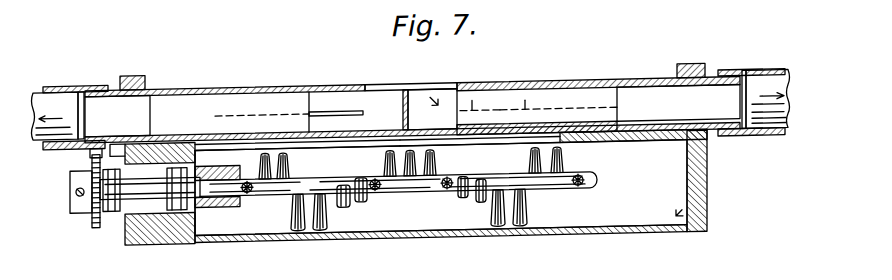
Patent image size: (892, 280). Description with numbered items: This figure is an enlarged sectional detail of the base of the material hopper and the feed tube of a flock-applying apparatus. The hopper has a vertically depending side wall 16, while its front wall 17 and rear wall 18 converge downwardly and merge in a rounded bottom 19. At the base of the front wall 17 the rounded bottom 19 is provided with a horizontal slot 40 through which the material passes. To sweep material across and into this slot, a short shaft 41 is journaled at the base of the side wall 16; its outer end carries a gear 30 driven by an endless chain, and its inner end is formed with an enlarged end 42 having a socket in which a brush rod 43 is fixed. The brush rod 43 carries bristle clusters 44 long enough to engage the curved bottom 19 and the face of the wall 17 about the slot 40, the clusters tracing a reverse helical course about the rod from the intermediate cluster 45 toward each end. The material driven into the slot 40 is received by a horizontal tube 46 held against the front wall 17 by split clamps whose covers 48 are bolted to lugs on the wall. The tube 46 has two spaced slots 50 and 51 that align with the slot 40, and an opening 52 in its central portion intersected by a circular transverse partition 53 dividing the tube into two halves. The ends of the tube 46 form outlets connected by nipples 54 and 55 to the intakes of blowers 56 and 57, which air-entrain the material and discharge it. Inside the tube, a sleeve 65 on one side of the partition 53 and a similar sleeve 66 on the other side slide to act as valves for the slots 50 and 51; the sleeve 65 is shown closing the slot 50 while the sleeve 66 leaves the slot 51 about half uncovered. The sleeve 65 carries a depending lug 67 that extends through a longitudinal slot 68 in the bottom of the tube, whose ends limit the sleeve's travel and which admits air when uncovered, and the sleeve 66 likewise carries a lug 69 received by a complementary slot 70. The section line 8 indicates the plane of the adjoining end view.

The section line 8- 8 is at (350, 124).
The side wall 16 is at (705, 219).
The front wall 17 is at (627, 146).
The rear wall 18 is at (610, 242).
The rounded bottom 19 is at (673, 179).
The gear 30 is at (97, 221).
The horizontal slot 40 is at (515, 143).
The short shaft 41 is at (137, 186).
The enlarged end 42 is at (222, 198).
The brush rod 43 is at (543, 188).
The bristle clusters 44 is at (297, 209).
The cluster 45 is at (410, 176).
The tube 46 is at (550, 86).
The cover 48 is at (135, 71).
The slot 50 is at (472, 142).
The slot 51 is at (325, 140).
The opening 52 is at (377, 67).
The partition 53 is at (402, 114).
The nipple 54 is at (764, 76).
The nipple 55 is at (57, 79).
The blower 56 is at (790, 151).
The blower 57 is at (42, 147).
The sleeve 65 is at (592, 101).
The sleeve 66 is at (218, 104).
The lug 67 is at (472, 102).
The longitudinal slot 68 is at (525, 103).
The lug 69 is at (287, 108).
The slot 70 is at (322, 112).